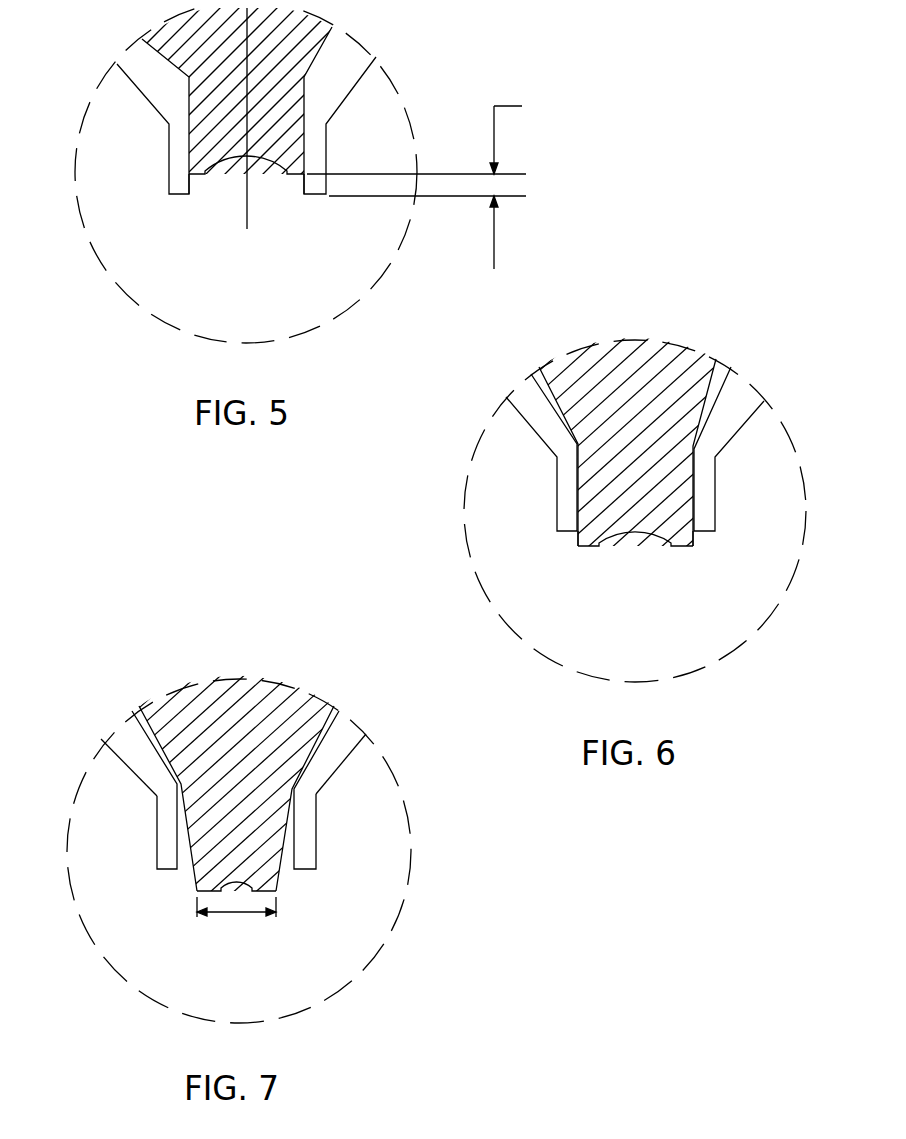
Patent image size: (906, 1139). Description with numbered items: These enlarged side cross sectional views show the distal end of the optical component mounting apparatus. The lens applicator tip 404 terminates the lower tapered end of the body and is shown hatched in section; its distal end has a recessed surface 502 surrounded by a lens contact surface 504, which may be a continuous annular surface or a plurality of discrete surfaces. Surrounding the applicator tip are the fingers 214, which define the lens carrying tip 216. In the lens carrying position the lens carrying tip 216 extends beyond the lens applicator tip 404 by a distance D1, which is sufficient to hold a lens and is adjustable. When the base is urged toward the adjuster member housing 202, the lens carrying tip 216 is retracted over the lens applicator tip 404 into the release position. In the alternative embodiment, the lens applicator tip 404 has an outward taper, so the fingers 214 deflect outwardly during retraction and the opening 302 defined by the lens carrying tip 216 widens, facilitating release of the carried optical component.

In FIG. 7, the adjuster member housing 202 is at (138, 772).
In FIG. 7, the fingers 214 is at (340, 773).
In FIG. 5, the lens carrying tip 216 is at (167, 174).
In FIG. 6, the lens carrying tip 216 is at (557, 496).
In FIG. 7, the lens carrying tip 216 is at (158, 850).
In FIG. 7, the opening 302 is at (240, 913).
In FIG. 5, the lens applicator tip 404 is at (282, 133).
In FIG. 6, the lens applicator tip 404 is at (672, 487).
In FIG. 7, the lens applicator tip 404 is at (270, 838).
In FIG. 5, the recessed surface 502 is at (232, 160).
In FIG. 6, the recessed surface 502 is at (617, 537).
In FIG. 5, the lens contact surface 504 is at (197, 180).
In FIG. 6, the lens contact surface 504 is at (585, 547).
In FIG. 5, the distance D1 is at (432, 181).